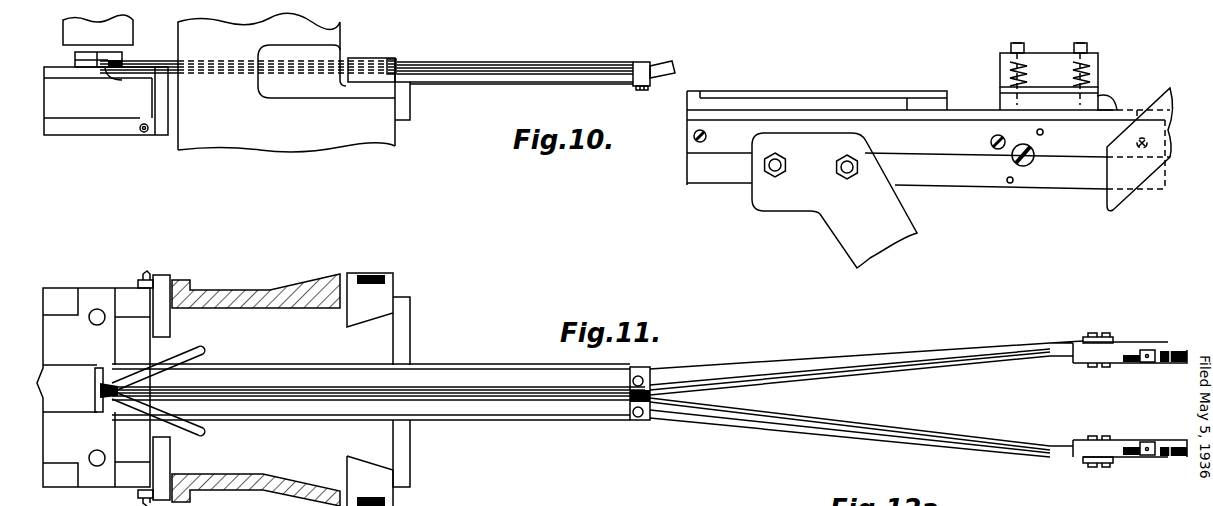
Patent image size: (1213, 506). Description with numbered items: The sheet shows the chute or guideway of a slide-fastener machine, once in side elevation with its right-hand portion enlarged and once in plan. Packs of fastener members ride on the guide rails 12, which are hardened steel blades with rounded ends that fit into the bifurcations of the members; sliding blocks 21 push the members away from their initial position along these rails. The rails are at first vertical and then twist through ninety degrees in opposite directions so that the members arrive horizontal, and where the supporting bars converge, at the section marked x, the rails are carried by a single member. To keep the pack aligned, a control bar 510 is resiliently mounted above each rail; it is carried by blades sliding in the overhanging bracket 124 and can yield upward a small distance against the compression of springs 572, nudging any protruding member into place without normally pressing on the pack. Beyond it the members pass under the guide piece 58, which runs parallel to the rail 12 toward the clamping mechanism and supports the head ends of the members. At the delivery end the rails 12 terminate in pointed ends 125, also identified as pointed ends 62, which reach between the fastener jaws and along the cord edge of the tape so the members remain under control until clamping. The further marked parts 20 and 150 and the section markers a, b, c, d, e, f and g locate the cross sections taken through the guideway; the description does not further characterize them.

In FIG. 10, the guide piece 58 is at (877, 100).
In FIG. 10, the guide rails 12 is at (957, 110).
In FIG. 11, the guide rails 12 is at (277, 396).
In FIG. 10, the overhanging bracket 124 is at (1048, 68).
In FIG. 11, the overhanging bracket 124 is at (1147, 352).
In FIG. 10, the springs 572 is at (1012, 82).
In FIG. 10, the control bar 510 is at (1103, 100).
In FIG. 10, the sliding blocks 21 is at (1173, 110).
In FIG. 11, the tube 20 is at (178, 352).
In FIG. 11, the pointed ends 125 is at (106, 384).
In FIG. 11, the pointed ends 62 is at (118, 380).
In FIG. 11, the end piece 150 is at (1170, 350).
In FIG. 10, the section line g- g is at (847, 127).
In FIG. 11, the section line g- g is at (1105, 488).
In FIG. 10, the section line e- e is at (1047, 190).
In FIG. 11, the section line e- e is at (1145, 490).
In FIG. 10, the section line f- f is at (1103, 110).
In FIG. 11, the section line f- f is at (1167, 490).
In FIG. 11, the section x— x is at (482, 378).
In FIG. 11, the section line a- a is at (813, 418).
In FIG. 11, the section line b- b is at (1013, 436).
In FIG. 11, the section line c- c is at (1050, 470).
In FIG. 11, the section line d- d is at (1127, 490).